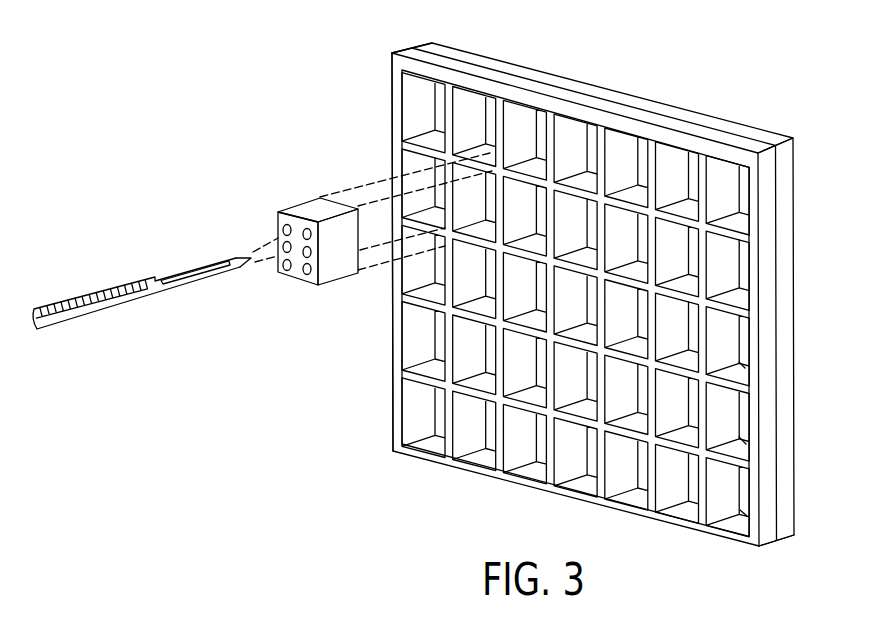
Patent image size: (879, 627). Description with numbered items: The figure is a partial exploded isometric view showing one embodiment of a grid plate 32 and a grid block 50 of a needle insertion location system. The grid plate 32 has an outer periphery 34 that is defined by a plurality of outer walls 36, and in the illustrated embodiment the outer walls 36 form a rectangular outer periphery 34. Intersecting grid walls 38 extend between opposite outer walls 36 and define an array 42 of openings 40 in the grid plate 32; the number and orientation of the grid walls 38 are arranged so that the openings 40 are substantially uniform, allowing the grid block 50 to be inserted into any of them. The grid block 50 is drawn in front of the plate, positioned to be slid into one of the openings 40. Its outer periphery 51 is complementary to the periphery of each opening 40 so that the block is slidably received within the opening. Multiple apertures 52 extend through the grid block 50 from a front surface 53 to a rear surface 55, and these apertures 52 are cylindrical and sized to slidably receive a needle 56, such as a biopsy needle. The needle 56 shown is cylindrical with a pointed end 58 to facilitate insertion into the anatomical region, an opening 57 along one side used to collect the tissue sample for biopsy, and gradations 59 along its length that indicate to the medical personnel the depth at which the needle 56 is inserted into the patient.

The grid plate 32 is at (730, 94).
The outer periphery 34 is at (607, 94).
The outer walls 36 is at (653, 107).
The grid walls 38 is at (587, 400).
The openings 40 is at (746, 513).
The array 42 is at (391, 98).
The grid block 50 is at (311, 209).
The outer periphery 51 is at (337, 271).
The apertures 52 is at (307, 272).
The front surface 53 is at (282, 218).
The rear surface 55 is at (351, 197).
The needle 56 is at (90, 292).
The opening 57 is at (186, 264).
The pointed end 58 is at (249, 268).
The gradations 59 is at (92, 318).